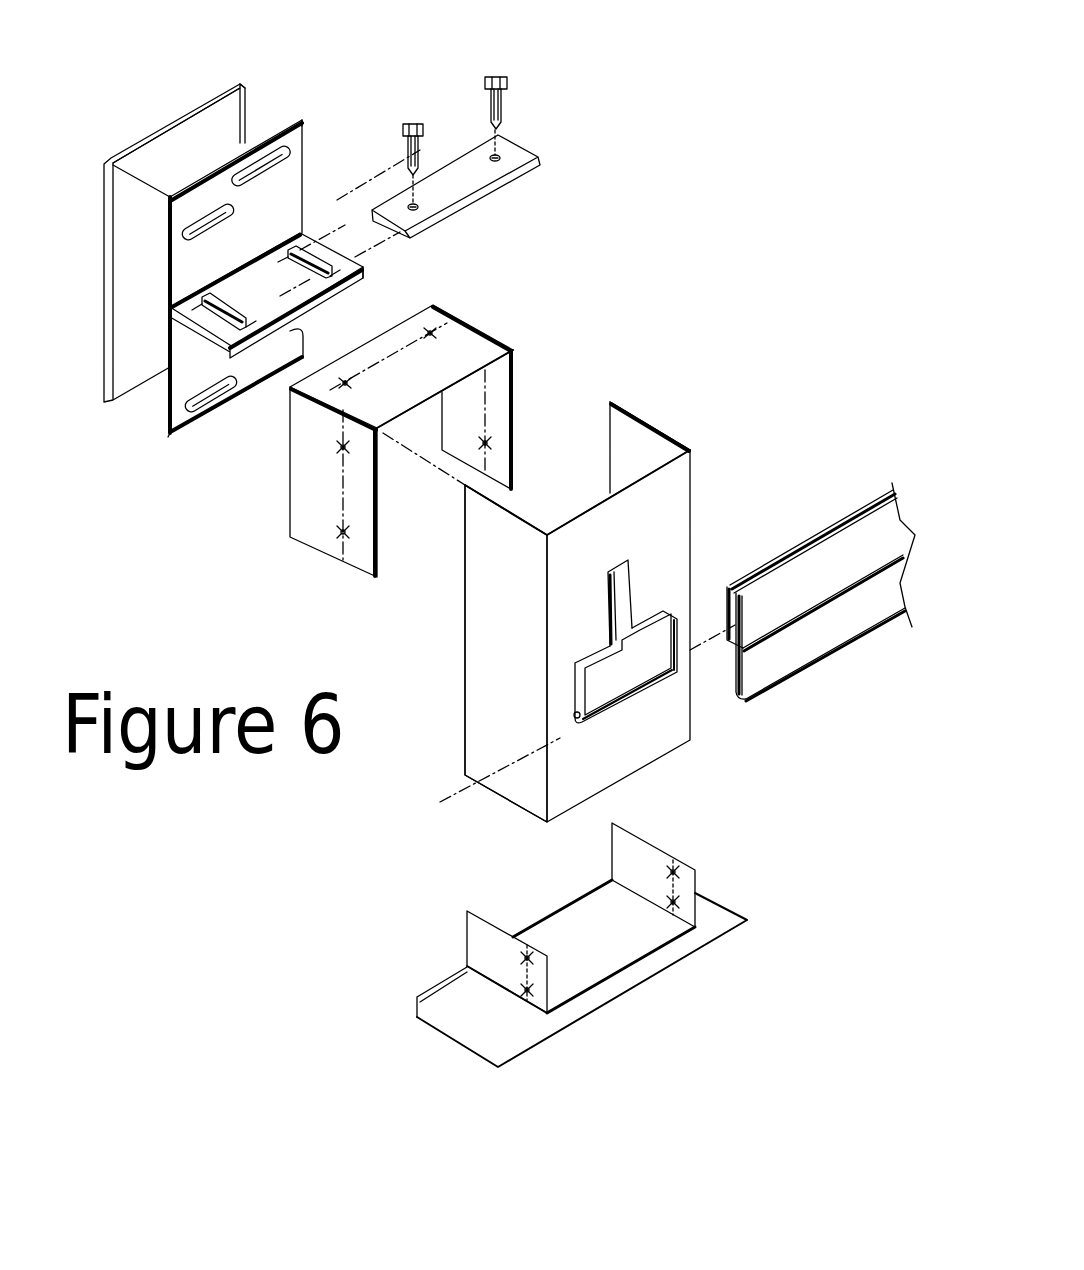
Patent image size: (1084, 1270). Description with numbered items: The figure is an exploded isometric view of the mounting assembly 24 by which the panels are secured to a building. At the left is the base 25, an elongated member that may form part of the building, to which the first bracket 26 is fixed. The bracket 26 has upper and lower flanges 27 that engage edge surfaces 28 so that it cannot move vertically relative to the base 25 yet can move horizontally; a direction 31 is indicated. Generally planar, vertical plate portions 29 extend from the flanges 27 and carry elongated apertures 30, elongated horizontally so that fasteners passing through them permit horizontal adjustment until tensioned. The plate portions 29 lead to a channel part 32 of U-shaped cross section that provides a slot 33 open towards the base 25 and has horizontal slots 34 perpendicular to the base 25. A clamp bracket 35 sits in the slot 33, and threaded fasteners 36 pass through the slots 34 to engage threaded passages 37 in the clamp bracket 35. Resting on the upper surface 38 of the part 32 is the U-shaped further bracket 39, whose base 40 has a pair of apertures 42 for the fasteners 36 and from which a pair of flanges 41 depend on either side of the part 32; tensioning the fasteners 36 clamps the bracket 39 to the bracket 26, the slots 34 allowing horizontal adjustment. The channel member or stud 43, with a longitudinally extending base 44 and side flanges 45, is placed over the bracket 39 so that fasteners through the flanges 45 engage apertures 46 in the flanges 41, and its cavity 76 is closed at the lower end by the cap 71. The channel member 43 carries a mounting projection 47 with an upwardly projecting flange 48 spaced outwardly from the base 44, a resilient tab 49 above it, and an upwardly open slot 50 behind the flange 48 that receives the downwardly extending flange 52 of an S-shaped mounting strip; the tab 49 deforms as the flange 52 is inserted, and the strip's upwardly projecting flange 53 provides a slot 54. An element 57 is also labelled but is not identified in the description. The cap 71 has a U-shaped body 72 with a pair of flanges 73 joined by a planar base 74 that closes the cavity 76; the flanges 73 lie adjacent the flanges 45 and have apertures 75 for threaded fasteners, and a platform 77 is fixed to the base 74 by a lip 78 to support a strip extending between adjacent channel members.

The mounting assembly 24 is at (740, 382).
The base 25 is at (245, 102).
The first bracket 26 is at (108, 484).
The upper and lower flanges 27 is at (300, 118).
The edge surfaces 28 is at (128, 148).
The plate portions 29 is at (282, 230).
The elongated apertures 30 is at (292, 154).
The direction 31 is at (172, 93).
The channel part 32 is at (362, 272).
The slot 33 is at (205, 338).
The slots 34 is at (300, 252).
The clamp bracket 35 is at (509, 148).
The threaded fasteners 36 is at (409, 123).
The threaded passages 37 is at (503, 163).
The upper surface 38 is at (322, 290).
The further bracket 39 is at (306, 570).
The base 40 is at (432, 388).
The flanges 41 is at (325, 495).
The apertures 42 is at (432, 333).
The channel member 43 is at (735, 450).
The base 44 is at (620, 555).
The side flanges 45 is at (520, 640).
The apertures 46 is at (150, 565).
The mounting projection 47 is at (664, 718).
The upwardly projecting flange 48 is at (603, 697).
The resilient tab 49 is at (626, 585).
The slot 50 is at (573, 708).
The downwardly extending flange 52 is at (735, 568).
The upwardly projecting flange 53 is at (773, 640).
The slot 54 is at (884, 547).
The bracket face 57 is at (870, 692).
The cap 71 is at (758, 969).
The body 72 is at (634, 1015).
The flanges 73 is at (483, 940).
The base 74 is at (625, 948).
The apertures 75 is at (527, 987).
The cavity 76 is at (585, 495).
The platform 77 is at (482, 1028).
The lip 78 is at (432, 1000).